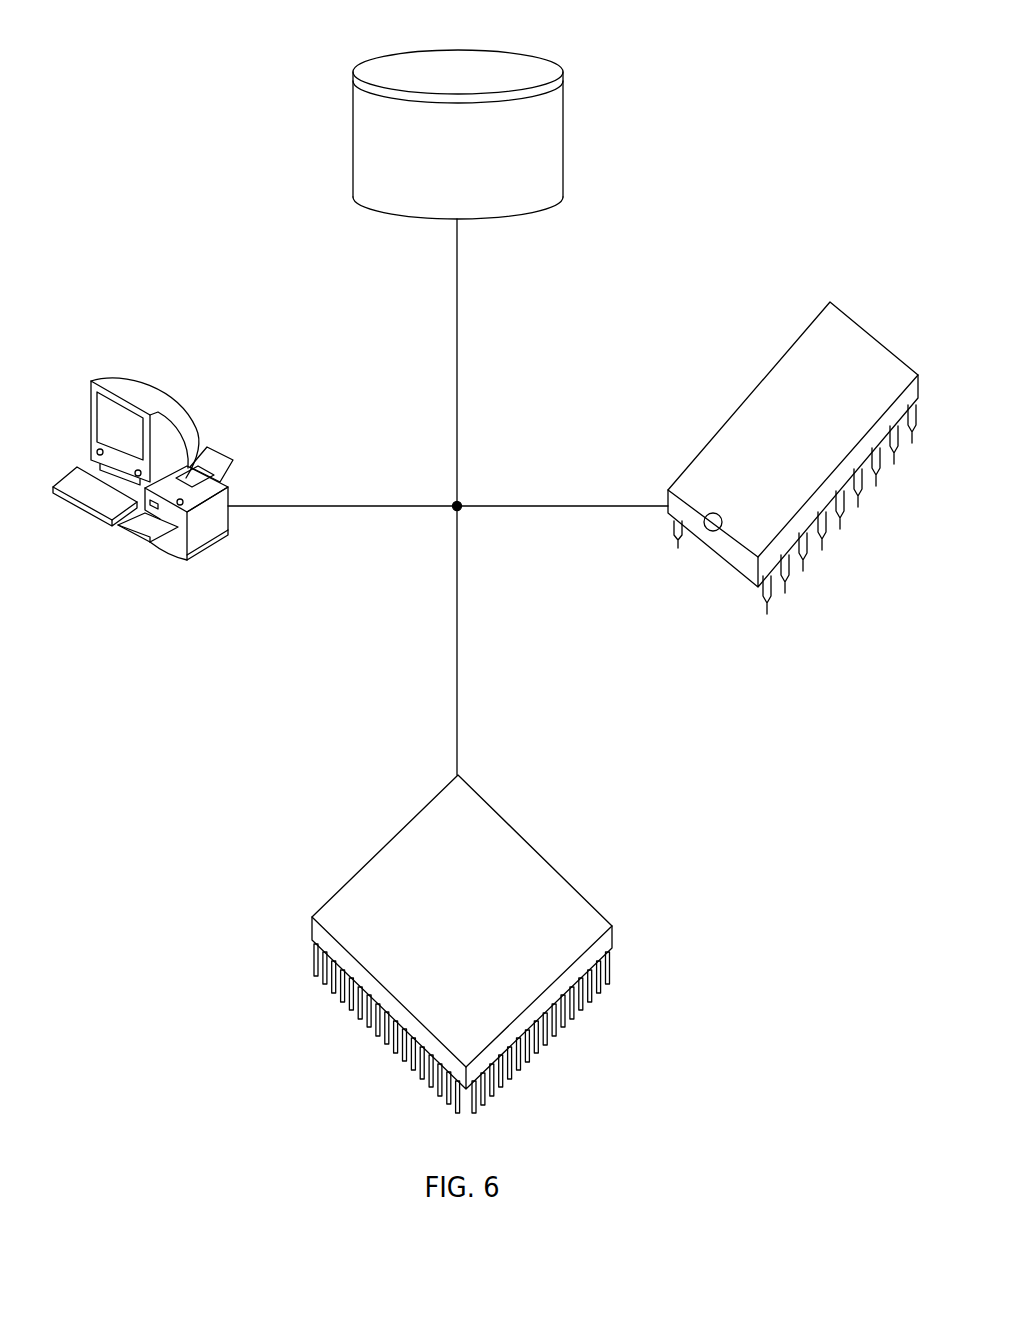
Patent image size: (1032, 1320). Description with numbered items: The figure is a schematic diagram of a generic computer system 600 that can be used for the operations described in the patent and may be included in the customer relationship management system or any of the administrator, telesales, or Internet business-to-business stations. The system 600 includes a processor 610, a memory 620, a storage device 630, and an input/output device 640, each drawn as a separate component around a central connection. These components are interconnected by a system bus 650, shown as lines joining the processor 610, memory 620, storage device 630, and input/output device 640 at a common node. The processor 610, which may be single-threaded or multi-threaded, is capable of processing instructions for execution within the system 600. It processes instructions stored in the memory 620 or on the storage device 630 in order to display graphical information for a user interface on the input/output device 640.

The computer system 600 is at (99, 156).
The processor 610 is at (383, 846).
The memory 620 is at (745, 397).
The storage device 630 is at (454, 50).
The input/output device 640 is at (91, 381).
The system bus 650 is at (357, 505).